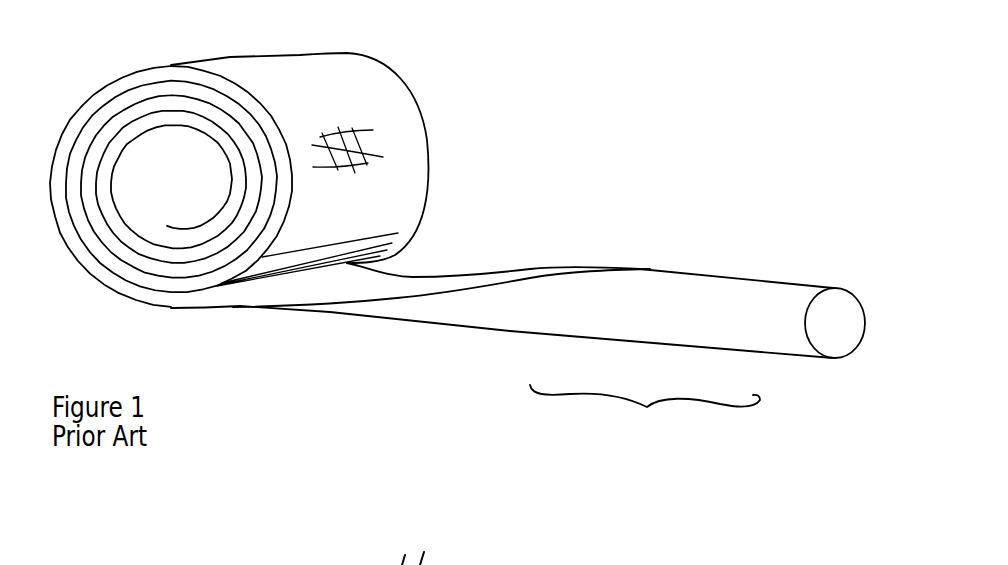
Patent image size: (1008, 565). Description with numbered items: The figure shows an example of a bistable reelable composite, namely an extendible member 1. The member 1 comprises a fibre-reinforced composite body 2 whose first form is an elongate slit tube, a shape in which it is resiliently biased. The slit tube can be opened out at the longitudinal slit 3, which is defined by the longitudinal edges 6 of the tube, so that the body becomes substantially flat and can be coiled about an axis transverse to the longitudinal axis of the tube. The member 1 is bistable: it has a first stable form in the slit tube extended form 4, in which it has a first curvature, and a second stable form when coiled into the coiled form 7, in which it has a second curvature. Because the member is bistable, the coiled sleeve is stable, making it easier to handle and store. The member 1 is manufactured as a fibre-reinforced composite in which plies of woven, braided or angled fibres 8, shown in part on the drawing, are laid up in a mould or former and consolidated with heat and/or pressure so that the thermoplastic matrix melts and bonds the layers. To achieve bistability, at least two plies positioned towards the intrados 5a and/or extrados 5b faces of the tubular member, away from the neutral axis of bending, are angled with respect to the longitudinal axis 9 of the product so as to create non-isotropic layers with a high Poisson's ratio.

The extendible member 1 is at (643, 33).
The fibre-reinforced composite body 2 is at (777, 360).
The longitudinal slit 3 is at (593, 263).
The slit tube extended form 4 is at (645, 420).
The intrados face 5a is at (476, 252).
The extrados face 5b is at (412, 347).
The longitudinal edges 6 is at (445, 268).
The coiled form 7 is at (208, 326).
The angled fibres 8 is at (375, 137).
The longitudinal axis 9 is at (835, 263).